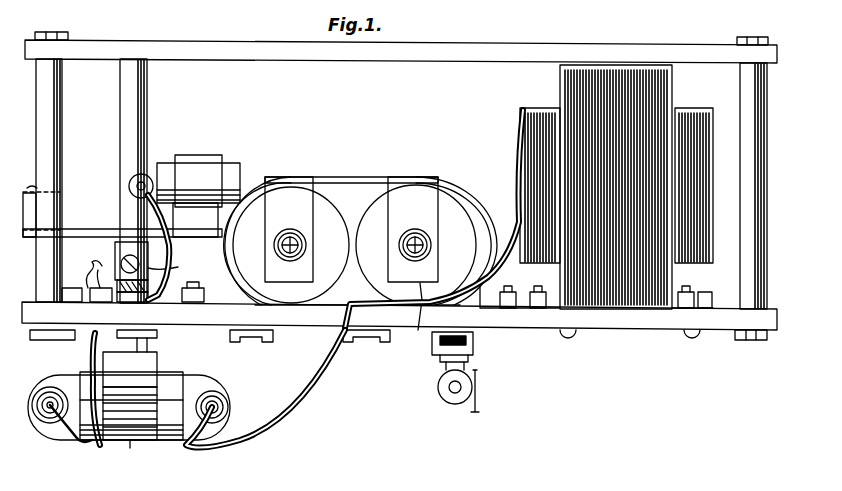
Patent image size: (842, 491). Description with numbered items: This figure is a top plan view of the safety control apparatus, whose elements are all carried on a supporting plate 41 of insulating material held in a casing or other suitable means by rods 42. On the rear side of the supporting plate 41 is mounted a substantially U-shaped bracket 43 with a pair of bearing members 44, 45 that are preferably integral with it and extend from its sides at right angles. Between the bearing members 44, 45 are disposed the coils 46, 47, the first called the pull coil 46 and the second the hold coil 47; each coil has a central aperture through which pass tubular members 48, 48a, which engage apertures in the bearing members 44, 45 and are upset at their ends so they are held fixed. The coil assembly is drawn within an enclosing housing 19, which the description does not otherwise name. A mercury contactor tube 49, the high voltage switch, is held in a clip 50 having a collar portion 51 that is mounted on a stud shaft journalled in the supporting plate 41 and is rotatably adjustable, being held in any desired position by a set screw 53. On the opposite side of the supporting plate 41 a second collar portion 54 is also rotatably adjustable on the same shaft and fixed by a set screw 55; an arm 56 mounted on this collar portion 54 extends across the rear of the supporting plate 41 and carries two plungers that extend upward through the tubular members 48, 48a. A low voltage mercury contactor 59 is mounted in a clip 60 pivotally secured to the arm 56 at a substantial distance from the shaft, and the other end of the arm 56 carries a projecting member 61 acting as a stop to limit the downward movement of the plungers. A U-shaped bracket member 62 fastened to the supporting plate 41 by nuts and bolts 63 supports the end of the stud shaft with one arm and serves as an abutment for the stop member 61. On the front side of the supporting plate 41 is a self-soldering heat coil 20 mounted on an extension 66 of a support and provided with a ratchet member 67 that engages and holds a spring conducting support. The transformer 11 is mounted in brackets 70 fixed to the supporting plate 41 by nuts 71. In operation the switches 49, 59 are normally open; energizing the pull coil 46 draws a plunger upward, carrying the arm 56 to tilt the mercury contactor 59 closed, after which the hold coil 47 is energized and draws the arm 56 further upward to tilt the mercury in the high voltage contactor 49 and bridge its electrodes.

The transformer 11 is at (588, 85).
The casing 19 is at (305, 173).
The heat coil 20 is at (478, 360).
The supporting plate 41 is at (556, 318).
The rods 42 is at (62, 105).
The bracket 43 is at (453, 182).
The bearing member 44 is at (430, 212).
The bearing member 45 is at (302, 202).
The pull coil 46 is at (418, 330).
The hold coil 47 is at (297, 283).
The tubular member 48 is at (432, 236).
The tubular member 48a is at (305, 232).
The mercury contactor tube 49 is at (72, 440).
The clip 50 is at (143, 365).
The collar portion 51 is at (147, 347).
The set screw 53 is at (92, 340).
The collar portion 54 is at (122, 248).
The set screw 55 is at (192, 284).
The arm 56 is at (175, 258).
The mercury contactor 59 is at (260, 162).
The clip 60 is at (205, 175).
The projecting member 61 is at (30, 205).
The U-shaped bracket member 62 is at (80, 228).
The nuts and bolts 63 is at (87, 277).
The extension 66 is at (443, 362).
The ratchet member 67 is at (478, 397).
The brackets 70 is at (677, 107).
The nuts 71 is at (530, 290).